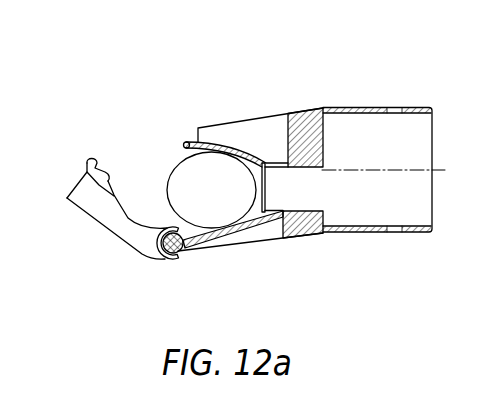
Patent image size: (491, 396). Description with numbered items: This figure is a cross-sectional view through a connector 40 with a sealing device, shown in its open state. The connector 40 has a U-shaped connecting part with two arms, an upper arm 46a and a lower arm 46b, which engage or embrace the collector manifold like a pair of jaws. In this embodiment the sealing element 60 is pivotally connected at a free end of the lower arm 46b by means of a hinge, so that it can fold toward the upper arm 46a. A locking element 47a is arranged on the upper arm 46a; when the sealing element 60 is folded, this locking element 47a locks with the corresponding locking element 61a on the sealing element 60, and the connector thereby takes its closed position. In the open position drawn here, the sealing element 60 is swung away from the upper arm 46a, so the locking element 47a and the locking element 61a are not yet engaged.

The connector 40 is at (348, 80).
The upper arm 46a is at (222, 142).
The lower arm 46b is at (210, 247).
The locking element 47a is at (183, 143).
The sealing element 60 is at (91, 248).
The locking element 61a is at (108, 175).